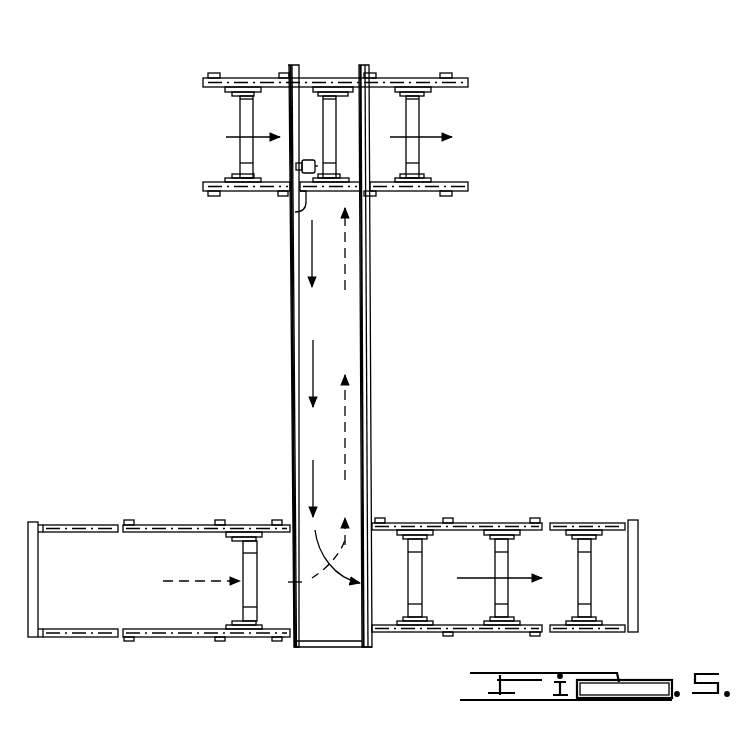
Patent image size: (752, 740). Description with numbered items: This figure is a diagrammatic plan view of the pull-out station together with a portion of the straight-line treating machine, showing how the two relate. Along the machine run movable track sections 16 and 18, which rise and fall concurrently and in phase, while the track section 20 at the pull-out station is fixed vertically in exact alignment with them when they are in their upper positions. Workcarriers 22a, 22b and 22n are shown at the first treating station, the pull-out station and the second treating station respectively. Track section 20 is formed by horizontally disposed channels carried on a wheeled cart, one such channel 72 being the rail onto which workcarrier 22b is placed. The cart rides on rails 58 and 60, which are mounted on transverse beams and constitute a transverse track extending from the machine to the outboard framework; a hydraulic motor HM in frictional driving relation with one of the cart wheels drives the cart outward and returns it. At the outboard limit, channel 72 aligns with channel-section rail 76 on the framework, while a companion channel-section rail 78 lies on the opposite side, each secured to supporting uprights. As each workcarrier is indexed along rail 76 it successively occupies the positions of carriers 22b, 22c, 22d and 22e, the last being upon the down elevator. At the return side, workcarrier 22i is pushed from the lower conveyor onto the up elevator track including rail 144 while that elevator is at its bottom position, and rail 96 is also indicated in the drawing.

The track section 16 is at (214, 191).
The track section 18 is at (455, 191).
The track section 20 is at (327, 335).
The workcarrier 22a is at (244, 117).
The workcarrier 22b is at (333, 100).
The workcarrier 22n is at (413, 98).
The workcarrier 22c is at (418, 540).
The workcarrier 22d is at (501, 540).
The workcarrier 22e is at (590, 540).
The workcarrier 22i is at (247, 595).
The hydraulic motor HM is at (306, 160).
The channel 72 is at (294, 212).
The rail 58 is at (297, 393).
The rail 60 is at (370, 391).
The rail 144 is at (95, 640).
The channel-section rail 78 is at (185, 640).
The channel-section rail 76 is at (462, 633).
The lower right end rail section 96 is at (580, 633).